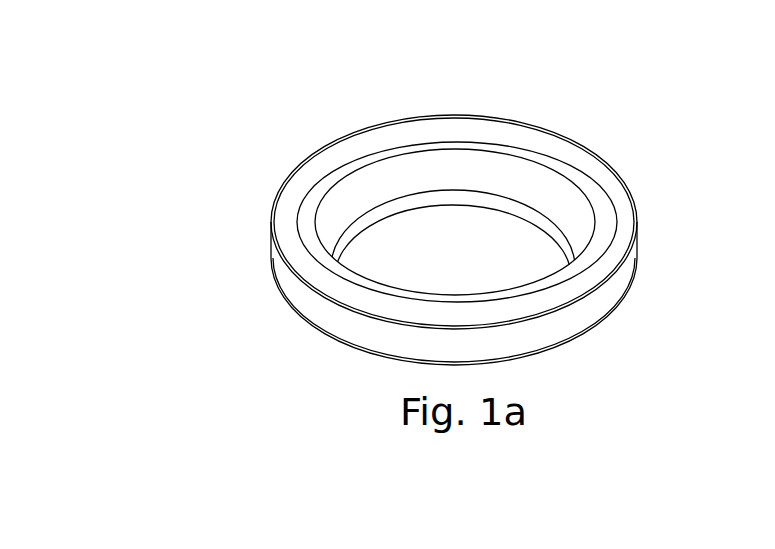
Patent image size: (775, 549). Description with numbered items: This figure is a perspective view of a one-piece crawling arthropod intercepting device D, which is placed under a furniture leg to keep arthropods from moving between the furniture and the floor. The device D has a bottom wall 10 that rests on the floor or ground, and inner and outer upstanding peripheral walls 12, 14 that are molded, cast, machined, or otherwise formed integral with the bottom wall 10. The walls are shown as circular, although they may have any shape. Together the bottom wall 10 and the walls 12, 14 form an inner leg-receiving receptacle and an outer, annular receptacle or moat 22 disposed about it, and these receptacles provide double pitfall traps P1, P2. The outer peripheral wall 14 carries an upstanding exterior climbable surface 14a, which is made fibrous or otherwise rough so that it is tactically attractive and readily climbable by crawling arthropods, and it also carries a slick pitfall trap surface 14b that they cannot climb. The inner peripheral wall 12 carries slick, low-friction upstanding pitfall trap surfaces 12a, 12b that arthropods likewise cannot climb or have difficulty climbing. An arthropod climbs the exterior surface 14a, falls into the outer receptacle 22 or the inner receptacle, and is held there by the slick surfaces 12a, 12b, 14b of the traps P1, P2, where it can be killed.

The bottom wall 10 is at (600, 348).
The inner peripheral wall 12 is at (616, 214).
The pitfall trap surface 12a is at (392, 186).
The pitfall trap surface 12b is at (467, 313).
The outer peripheral wall 14 is at (642, 152).
The exterior arthropod-climbable surface 14a is at (331, 316).
The pitfall trap surface 14b is at (284, 212).
The outer receptacle 22 is at (605, 262).
The intercepting device D is at (262, 276).
The first pitfall trap P1 is at (483, 232).
The second pitfall trap P2 is at (611, 250).